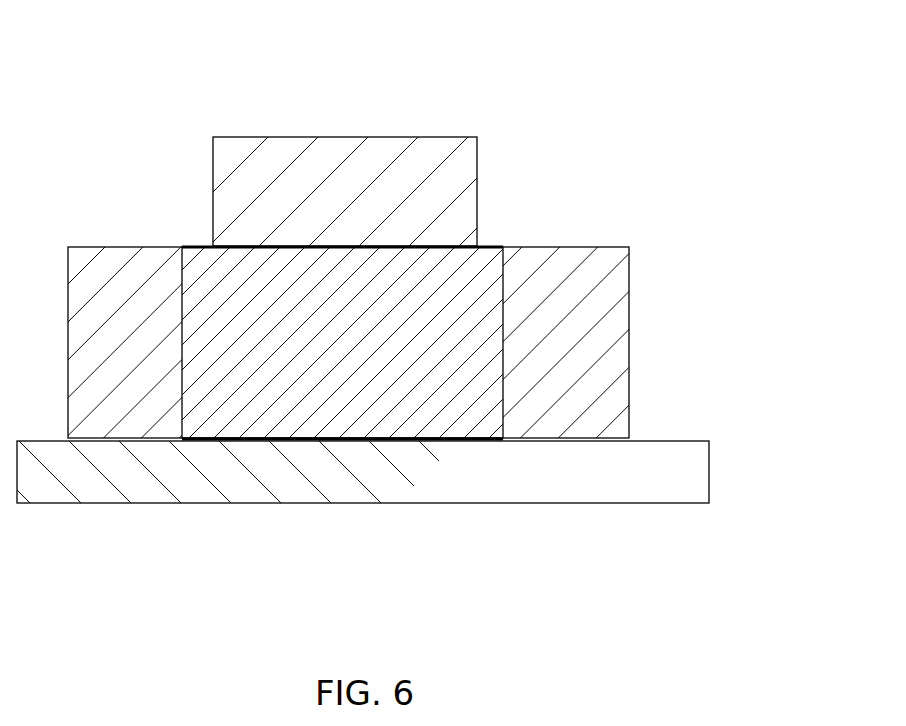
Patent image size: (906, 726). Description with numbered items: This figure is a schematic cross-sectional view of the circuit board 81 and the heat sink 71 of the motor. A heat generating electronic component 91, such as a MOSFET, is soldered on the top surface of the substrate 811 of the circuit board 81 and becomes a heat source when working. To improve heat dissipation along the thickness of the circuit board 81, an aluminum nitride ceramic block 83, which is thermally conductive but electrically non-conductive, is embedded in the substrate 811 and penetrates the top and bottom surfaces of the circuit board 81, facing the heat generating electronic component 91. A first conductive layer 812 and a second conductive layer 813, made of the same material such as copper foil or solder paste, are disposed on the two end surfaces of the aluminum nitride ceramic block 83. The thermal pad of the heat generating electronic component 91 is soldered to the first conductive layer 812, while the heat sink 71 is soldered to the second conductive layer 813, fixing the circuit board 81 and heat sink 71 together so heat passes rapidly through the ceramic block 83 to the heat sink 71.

The heat sink 71 is at (235, 477).
The circuit board 81 is at (453, 363).
The substrate 811 is at (602, 361).
The first conductive layer 812 is at (497, 245).
The second conductive layer 813 is at (492, 440).
The aluminum nitride ceramic block 83 is at (332, 367).
The heat generating electronic component 91 is at (350, 178).